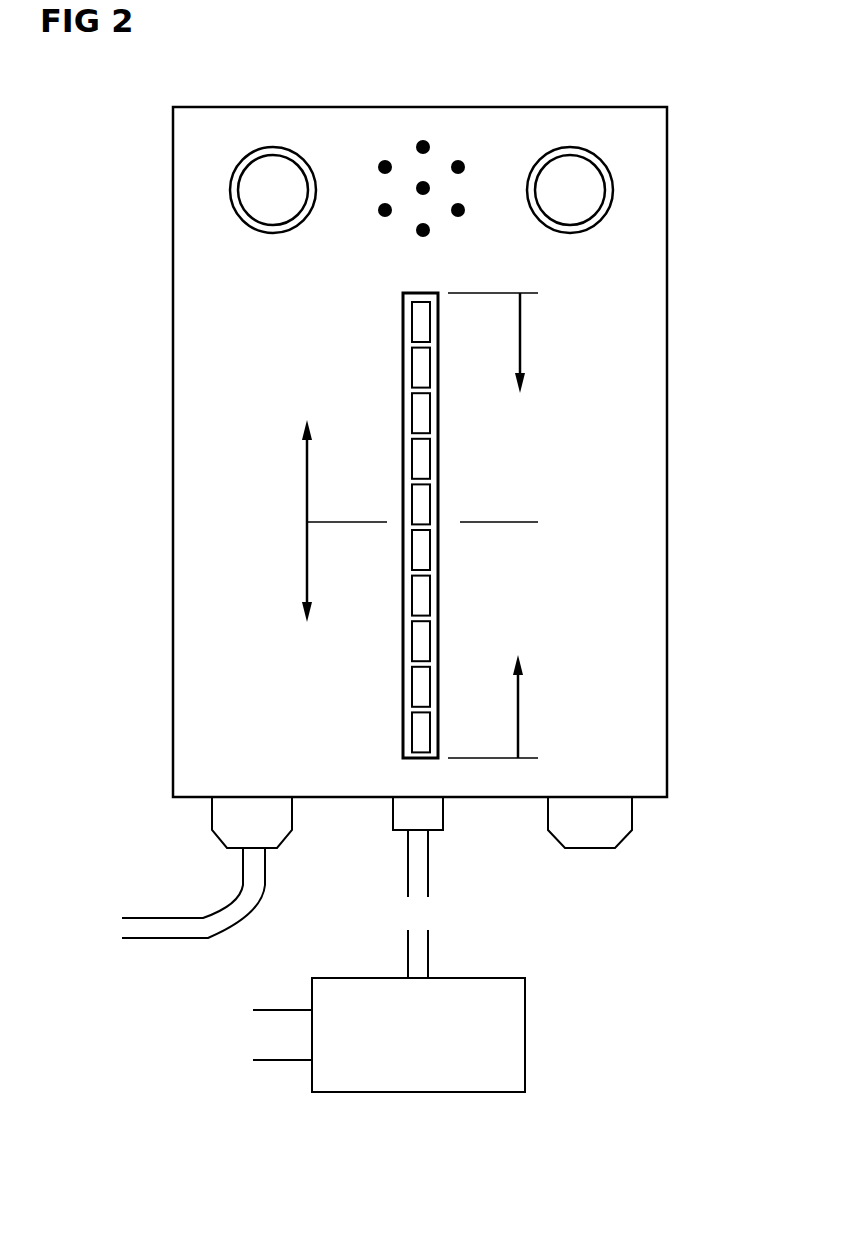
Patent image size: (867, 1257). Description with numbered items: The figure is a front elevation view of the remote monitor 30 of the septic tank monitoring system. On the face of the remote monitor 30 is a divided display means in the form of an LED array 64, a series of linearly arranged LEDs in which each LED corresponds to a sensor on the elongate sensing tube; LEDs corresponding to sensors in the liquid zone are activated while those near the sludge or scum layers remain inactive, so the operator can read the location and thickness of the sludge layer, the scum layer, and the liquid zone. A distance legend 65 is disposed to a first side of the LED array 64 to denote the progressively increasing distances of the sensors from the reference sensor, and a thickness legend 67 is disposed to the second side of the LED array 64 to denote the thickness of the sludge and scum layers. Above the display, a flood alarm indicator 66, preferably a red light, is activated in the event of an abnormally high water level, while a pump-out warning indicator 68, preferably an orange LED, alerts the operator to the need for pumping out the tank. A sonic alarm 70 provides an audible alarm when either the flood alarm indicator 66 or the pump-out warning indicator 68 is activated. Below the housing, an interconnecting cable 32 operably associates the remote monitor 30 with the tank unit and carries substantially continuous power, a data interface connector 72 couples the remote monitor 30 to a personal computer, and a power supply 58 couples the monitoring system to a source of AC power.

The remote monitor 30 is at (478, 100).
The interconnecting cable 32 is at (233, 902).
The power supply 58 is at (525, 1035).
The LED array 64 is at (403, 300).
The distance legend 65 is at (340, 366).
The flood alarm indicator 66 is at (232, 172).
The thickness legend 67 is at (498, 594).
The pump-out warning indicator 68 is at (610, 175).
The sonic alarm 70 is at (421, 145).
The data interface connector 72 is at (632, 823).